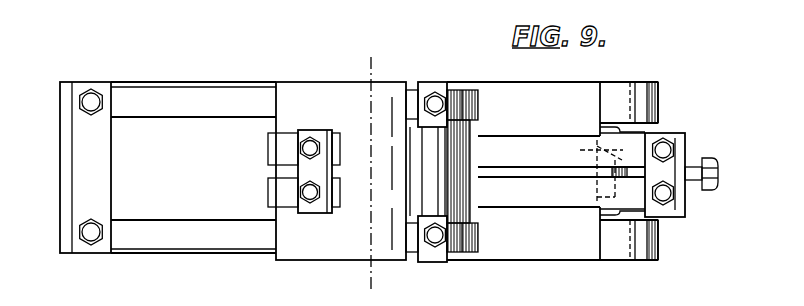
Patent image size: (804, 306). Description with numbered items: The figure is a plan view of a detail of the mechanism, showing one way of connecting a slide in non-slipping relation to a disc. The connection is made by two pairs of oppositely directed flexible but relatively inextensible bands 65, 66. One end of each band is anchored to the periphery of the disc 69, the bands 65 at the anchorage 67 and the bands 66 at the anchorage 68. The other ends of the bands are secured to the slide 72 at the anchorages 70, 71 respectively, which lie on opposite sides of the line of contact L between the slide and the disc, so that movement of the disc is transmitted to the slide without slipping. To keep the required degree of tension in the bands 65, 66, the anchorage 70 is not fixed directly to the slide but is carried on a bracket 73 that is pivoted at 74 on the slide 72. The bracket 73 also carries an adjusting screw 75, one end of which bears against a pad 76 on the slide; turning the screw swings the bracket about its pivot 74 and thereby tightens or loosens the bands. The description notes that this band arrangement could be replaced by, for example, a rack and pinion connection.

The flexible bands 65 is at (512, 142).
The flexible bands 66 is at (162, 98).
The anchorage 67 is at (320, 130).
The anchorage 68 is at (427, 86).
The disc 69 is at (310, 255).
The anchorage 70 is at (653, 133).
The anchorage 71 is at (95, 170).
The slide 72 is at (213, 210).
The bracket 73 is at (681, 170).
The pivot 74 is at (632, 130).
The adjusting screw 75 is at (708, 190).
The pad 76 is at (596, 150).
The line of contact L is at (379, 174).